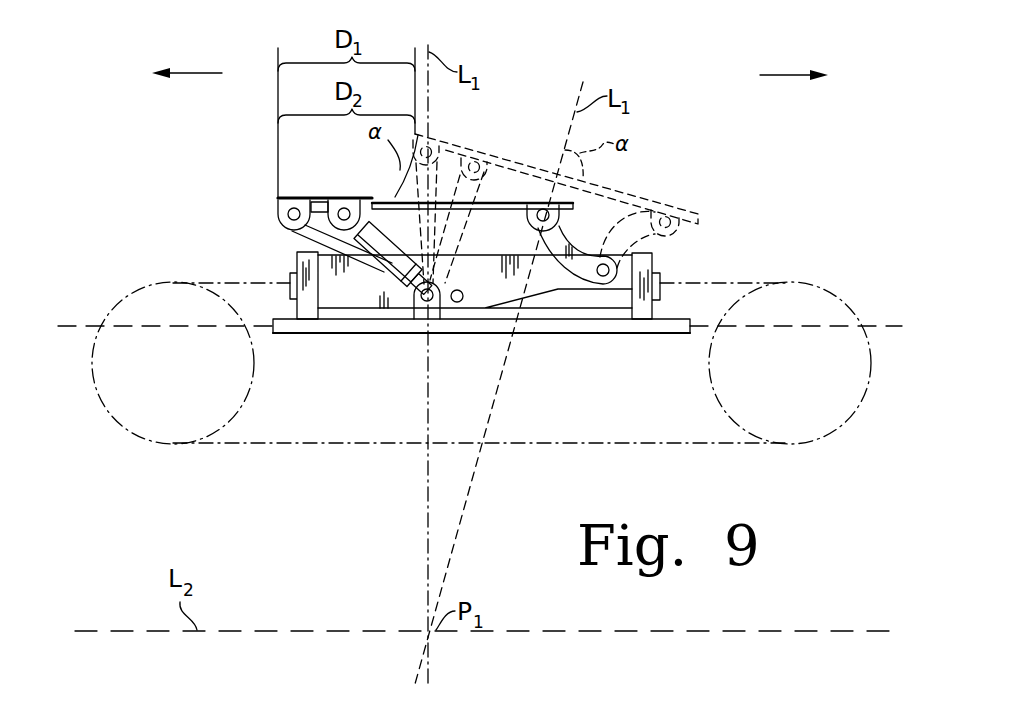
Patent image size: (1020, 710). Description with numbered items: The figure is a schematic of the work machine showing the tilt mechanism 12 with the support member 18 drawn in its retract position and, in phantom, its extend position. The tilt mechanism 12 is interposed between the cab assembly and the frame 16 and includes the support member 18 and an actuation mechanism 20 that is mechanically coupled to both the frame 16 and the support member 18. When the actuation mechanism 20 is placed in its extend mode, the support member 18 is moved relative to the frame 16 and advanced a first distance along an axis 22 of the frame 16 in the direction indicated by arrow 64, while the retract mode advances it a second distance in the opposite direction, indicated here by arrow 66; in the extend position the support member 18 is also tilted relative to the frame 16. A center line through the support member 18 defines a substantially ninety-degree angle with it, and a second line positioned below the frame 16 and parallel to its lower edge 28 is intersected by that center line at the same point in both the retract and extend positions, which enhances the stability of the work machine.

The tilt mechanism 12 is at (730, 200).
The frame 16 is at (285, 324).
The support member 18 is at (374, 198).
The actuation mechanism 20 is at (390, 313).
The axis 22 is at (67, 325).
The lower edge 28 is at (322, 334).
The arrow 64 is at (788, 74).
The tilt direction arrow 66 is at (197, 73).